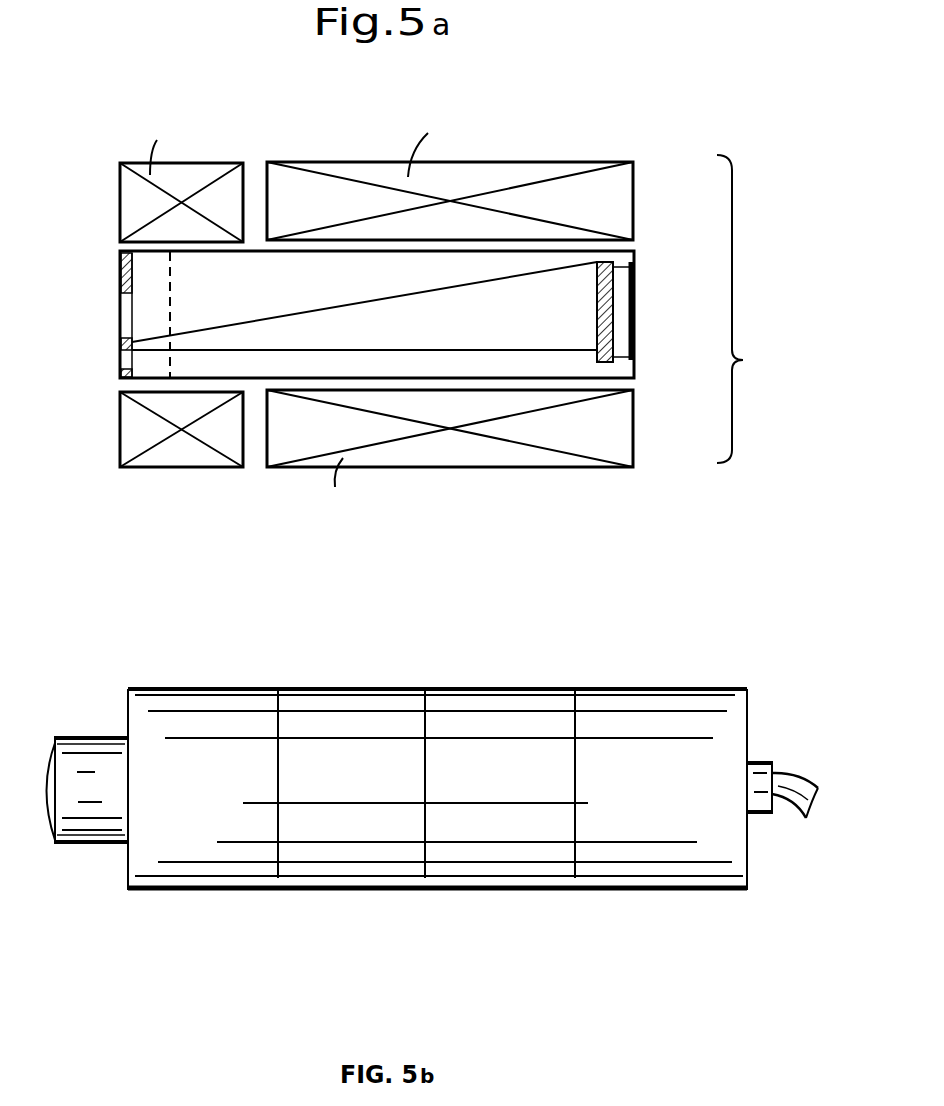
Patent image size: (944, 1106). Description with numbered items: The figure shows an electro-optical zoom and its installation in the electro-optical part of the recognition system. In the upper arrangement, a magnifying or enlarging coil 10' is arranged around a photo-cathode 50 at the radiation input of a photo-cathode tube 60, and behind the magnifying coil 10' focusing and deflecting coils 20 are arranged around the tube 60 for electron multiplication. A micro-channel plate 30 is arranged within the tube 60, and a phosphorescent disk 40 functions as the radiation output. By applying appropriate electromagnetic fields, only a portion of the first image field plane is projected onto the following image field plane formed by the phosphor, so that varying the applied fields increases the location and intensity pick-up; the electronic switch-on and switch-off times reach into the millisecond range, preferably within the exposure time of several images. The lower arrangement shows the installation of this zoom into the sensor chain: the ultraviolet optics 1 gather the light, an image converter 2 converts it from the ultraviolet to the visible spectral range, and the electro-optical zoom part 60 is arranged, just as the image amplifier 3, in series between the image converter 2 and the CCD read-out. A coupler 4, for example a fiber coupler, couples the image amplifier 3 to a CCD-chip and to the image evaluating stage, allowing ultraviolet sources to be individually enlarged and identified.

In FIG. 5A, the magnifying coil 10' is at (170, 327).
In FIG. 5A, the focusing and deflecting coils 20 is at (607, 190).
In FIG. 5A, the micro-channel plate 30 is at (413, 339).
In FIG. 5A, the phosphorescent disk 40 is at (637, 318).
In FIG. 5A, the photo-cathode 50 is at (117, 365).
In FIG. 5A, the photo-cathode tube 60 is at (443, 283).
In FIG. 5B, the photo-cathode tube 60 is at (348, 865).
In FIG. 5B, the ultraviolet optics 1 is at (90, 818).
In FIG. 5B, the image converter 2 is at (197, 853).
In FIG. 5B, the image amplifier 3 is at (493, 858).
In FIG. 5B, the coupler 4 is at (658, 862).